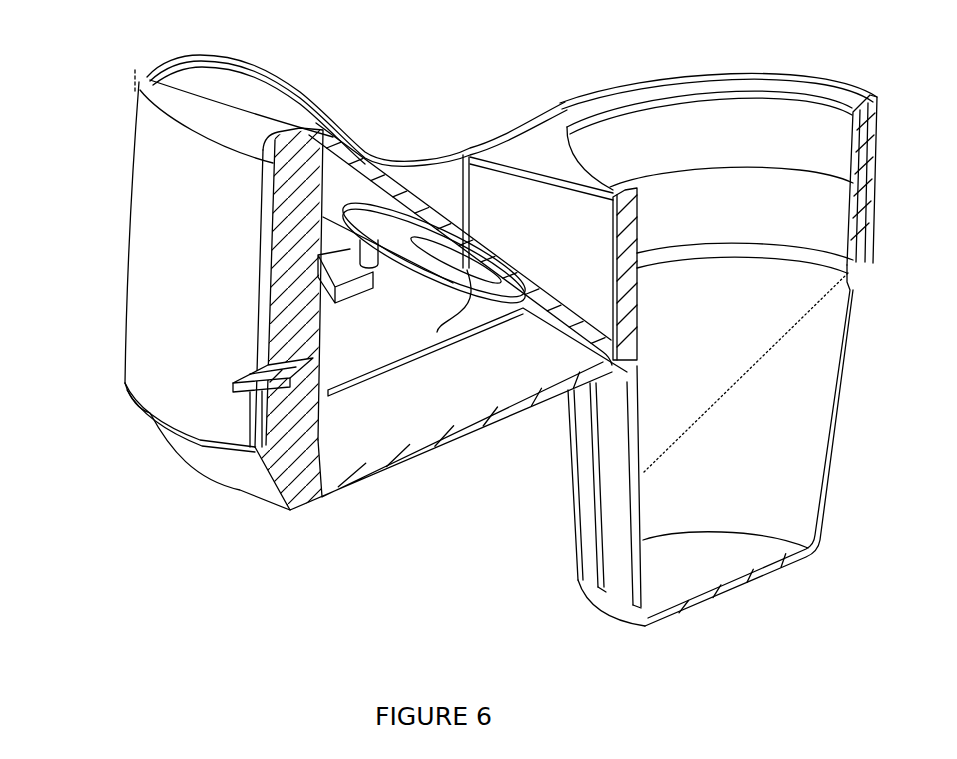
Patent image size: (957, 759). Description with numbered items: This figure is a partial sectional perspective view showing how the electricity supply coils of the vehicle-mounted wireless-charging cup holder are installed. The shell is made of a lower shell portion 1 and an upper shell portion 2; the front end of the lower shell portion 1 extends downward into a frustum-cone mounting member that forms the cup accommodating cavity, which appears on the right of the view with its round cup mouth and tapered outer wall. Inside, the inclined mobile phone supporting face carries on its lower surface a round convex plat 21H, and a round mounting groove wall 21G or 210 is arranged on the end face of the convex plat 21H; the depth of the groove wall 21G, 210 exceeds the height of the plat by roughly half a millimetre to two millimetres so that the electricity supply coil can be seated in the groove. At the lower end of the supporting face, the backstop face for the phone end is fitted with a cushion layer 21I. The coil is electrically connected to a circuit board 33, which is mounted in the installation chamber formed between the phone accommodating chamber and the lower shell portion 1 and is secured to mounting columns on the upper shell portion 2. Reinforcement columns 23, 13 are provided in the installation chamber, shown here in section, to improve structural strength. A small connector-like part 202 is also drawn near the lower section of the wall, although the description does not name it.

The lower shell portion 1 is at (222, 462).
The upper shell portion 2 is at (163, 268).
The reinforcement column 13 is at (298, 458).
The reinforcement column 23 is at (295, 273).
The circuit board 33 is at (355, 345).
The connector bracket 202 is at (235, 380).
The round mounting groove wall 210 is at (372, 207).
The round mounting groove wall 21G is at (583, 218).
The round convex plat 21H is at (400, 233).
The cushion layer 21I is at (607, 257).